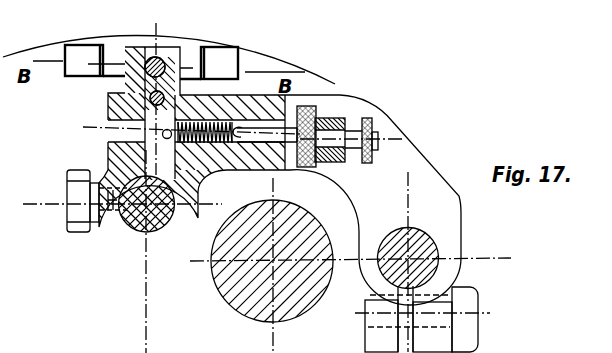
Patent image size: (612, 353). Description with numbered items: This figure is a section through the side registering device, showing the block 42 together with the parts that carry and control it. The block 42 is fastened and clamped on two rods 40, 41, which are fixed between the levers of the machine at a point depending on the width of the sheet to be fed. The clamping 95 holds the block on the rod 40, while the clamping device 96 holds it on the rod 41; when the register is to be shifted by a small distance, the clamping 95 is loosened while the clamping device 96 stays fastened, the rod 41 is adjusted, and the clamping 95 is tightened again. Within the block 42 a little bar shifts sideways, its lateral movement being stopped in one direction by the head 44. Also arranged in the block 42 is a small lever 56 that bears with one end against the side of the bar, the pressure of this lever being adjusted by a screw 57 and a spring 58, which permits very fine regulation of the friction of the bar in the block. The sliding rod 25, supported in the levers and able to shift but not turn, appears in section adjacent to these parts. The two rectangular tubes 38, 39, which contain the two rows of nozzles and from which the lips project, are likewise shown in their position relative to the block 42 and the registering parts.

The sliding rod 25 is at (302, 233).
The rectangular tube 38 is at (80, 53).
The rectangular tube 39 is at (223, 58).
The rod 40 is at (140, 240).
The rod 41 is at (417, 239).
The block 42 is at (446, 223).
The head 44 is at (115, 251).
The small lever 56 is at (177, 60).
The screw 57 is at (278, 133).
The spring 58 is at (220, 170).
The clamping device 95 is at (68, 214).
The clamping device 96 is at (432, 322).